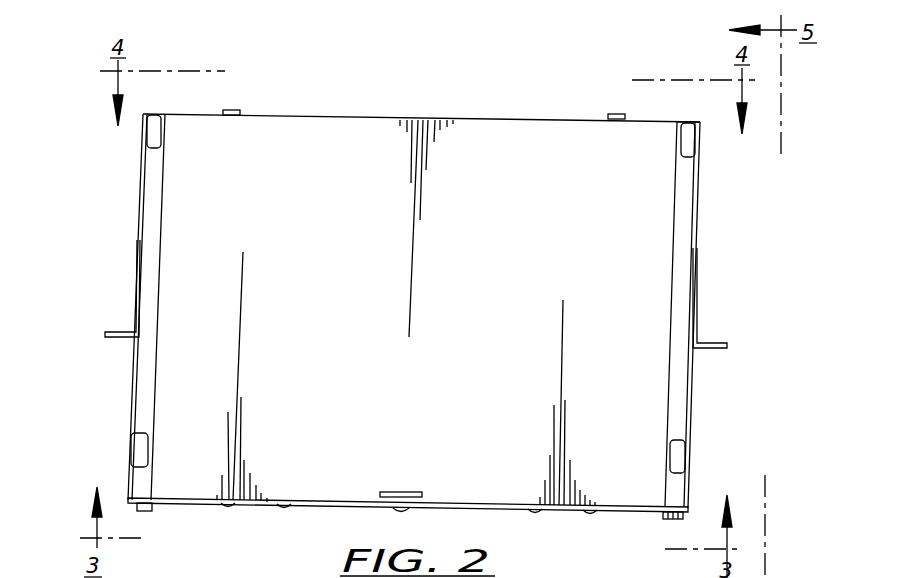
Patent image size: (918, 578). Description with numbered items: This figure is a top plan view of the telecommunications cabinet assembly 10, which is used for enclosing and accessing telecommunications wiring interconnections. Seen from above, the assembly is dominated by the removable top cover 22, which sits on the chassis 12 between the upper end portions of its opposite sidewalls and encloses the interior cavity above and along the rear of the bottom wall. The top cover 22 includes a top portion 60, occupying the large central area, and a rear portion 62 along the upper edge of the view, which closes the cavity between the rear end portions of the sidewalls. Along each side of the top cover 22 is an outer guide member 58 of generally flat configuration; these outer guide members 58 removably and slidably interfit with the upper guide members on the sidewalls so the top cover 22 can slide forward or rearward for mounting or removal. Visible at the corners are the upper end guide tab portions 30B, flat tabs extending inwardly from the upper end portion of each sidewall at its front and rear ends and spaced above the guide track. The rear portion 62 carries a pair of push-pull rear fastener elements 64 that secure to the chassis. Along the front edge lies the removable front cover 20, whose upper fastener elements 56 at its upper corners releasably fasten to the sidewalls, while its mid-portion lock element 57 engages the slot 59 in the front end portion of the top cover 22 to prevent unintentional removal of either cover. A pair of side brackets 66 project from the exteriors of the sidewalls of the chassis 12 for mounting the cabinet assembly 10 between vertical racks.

The cabinet assembly 10 is at (728, 210).
The chassis 12 is at (700, 426).
The front cover 20 is at (327, 505).
The top cover 22 is at (658, 244).
The upper end guide tab portions 30B is at (151, 138).
The upper fastener elements 56 is at (148, 512).
The lock element 57 is at (405, 509).
The outer guide members 58 is at (145, 383).
The slot 59 is at (412, 492).
The top portion 60 is at (387, 393).
The rear portion 62 is at (393, 116).
The rear fastener elements 64 is at (232, 110).
The side brackets 66 is at (110, 332).